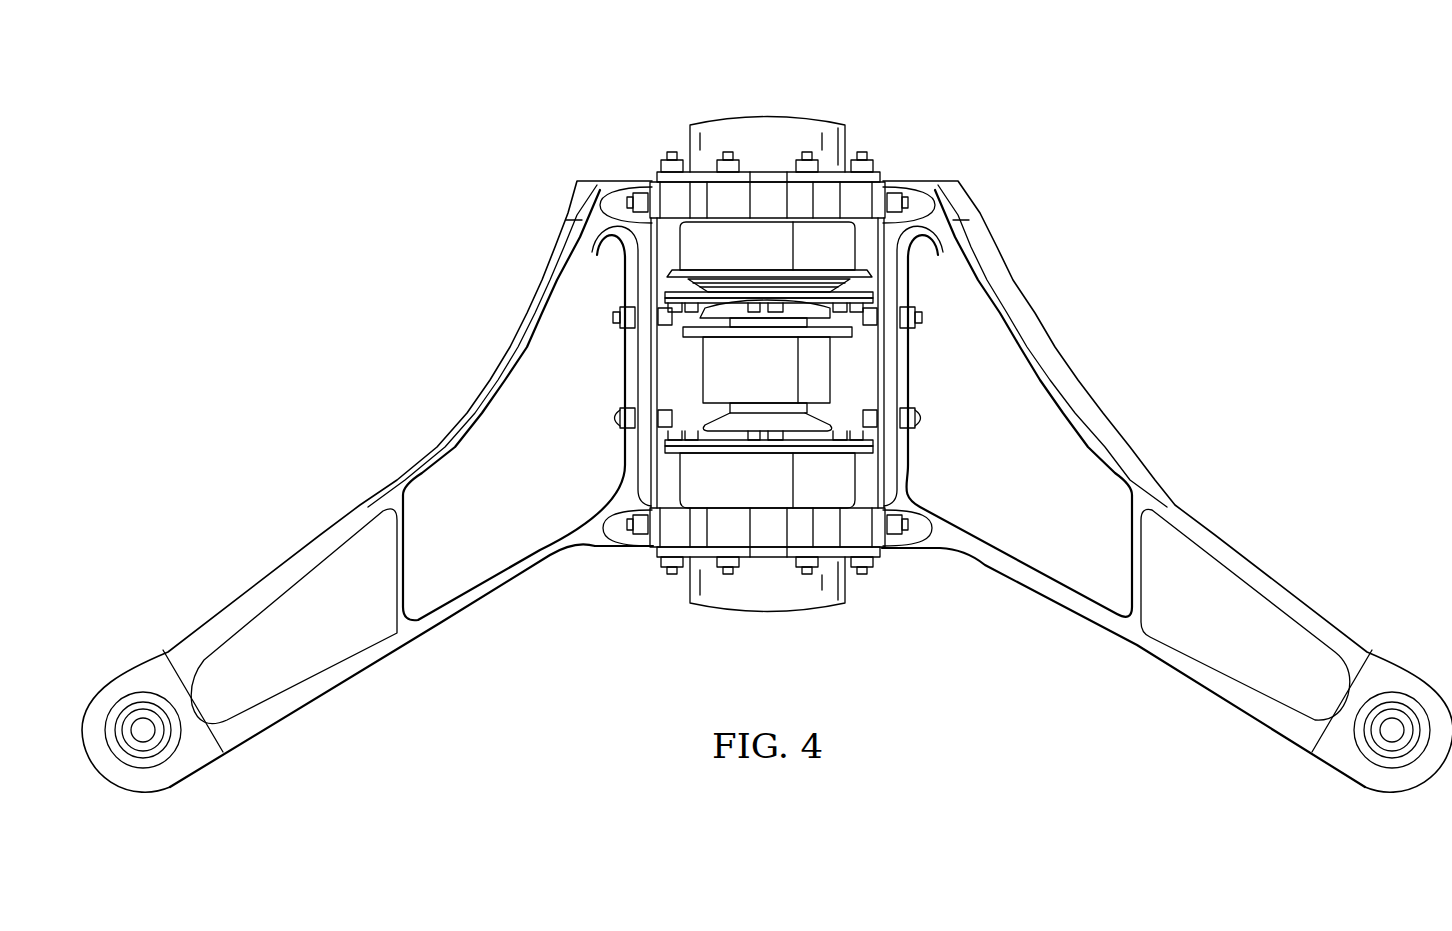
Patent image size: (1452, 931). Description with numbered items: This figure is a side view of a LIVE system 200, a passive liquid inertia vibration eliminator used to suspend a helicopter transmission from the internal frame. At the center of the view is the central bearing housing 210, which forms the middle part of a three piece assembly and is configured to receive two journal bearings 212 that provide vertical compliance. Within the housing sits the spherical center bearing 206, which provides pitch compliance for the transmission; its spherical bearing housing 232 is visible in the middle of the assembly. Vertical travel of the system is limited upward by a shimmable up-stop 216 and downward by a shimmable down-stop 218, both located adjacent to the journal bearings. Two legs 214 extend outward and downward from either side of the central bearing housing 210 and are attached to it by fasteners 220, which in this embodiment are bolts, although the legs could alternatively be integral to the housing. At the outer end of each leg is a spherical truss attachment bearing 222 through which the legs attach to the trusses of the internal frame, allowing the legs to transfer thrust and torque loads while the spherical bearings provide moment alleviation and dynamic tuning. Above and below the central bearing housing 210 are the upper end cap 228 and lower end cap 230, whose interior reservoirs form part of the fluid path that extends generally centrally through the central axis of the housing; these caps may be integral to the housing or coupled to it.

The LIVE system 200 is at (1038, 82).
The spherical center bearing 206 is at (676, 349).
The central bearing housing 210 is at (708, 190).
The journal bearings 212 is at (862, 288).
The legs 214 is at (267, 627).
The shimmable up-stop 216 is at (863, 316).
The shimmable down-stop 218 is at (830, 424).
The fasteners 220 is at (612, 318).
The spherical truss attachment bearings 222 is at (143, 703).
The upper end cap 228 is at (850, 140).
The lower end cap 230 is at (850, 594).
The spherical bearing housing 232 is at (702, 366).